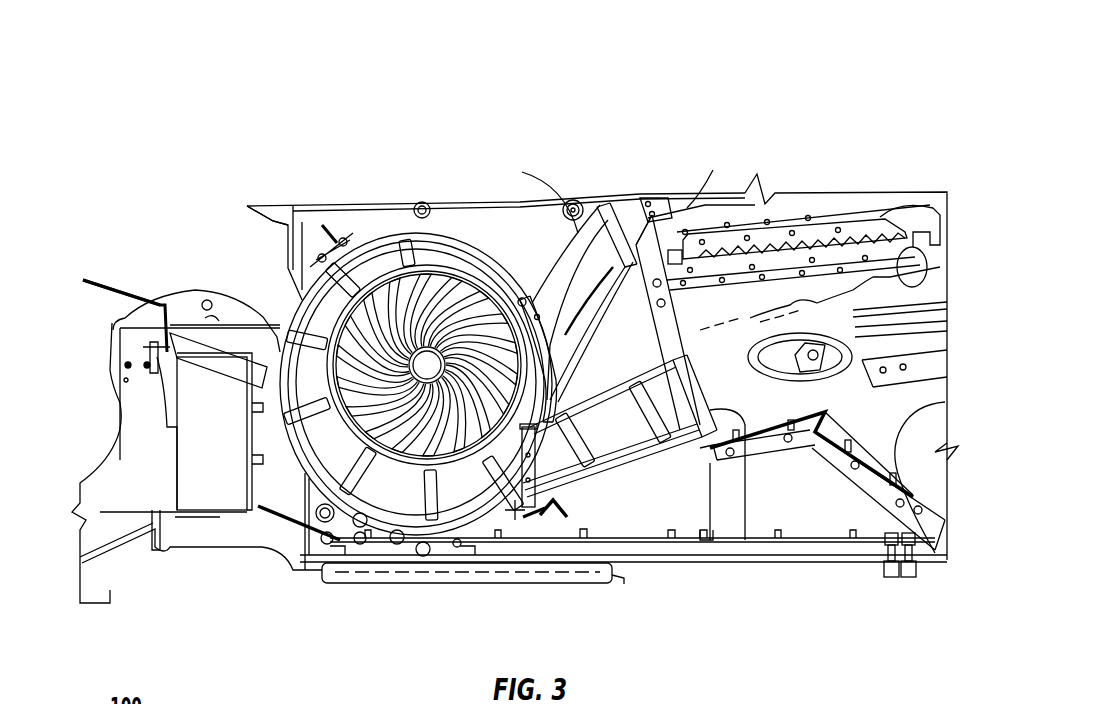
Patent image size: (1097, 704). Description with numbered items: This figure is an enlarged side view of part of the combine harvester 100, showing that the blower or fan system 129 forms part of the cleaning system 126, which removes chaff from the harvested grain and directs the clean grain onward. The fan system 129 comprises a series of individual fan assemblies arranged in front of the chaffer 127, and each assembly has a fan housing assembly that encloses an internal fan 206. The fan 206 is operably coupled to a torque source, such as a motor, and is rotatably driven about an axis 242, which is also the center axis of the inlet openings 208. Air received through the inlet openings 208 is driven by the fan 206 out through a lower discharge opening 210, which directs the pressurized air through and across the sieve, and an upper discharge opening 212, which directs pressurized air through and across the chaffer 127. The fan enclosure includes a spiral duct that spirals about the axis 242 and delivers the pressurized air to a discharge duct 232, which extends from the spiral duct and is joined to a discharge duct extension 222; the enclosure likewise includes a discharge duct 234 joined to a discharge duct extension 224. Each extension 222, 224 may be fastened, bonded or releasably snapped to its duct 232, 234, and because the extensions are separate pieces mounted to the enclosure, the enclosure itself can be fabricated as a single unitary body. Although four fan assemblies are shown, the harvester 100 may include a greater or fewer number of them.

The harvester 100 is at (628, 119).
The cleaning system 126 is at (887, 25).
The chaffer 127 is at (883, 230).
The blower or fan system 129 is at (282, 291).
The axis 242 is at (340, 347).
The inlet openings 208 is at (360, 410).
The fan 206 is at (445, 415).
The discharge duct 234 is at (538, 295).
The discharge duct extension 224 is at (548, 262).
The discharge duct extension 222 is at (636, 452).
The discharge duct 232 is at (555, 448).
The lower discharge opening 210 is at (717, 406).
The upper discharge opening 212 is at (655, 238).